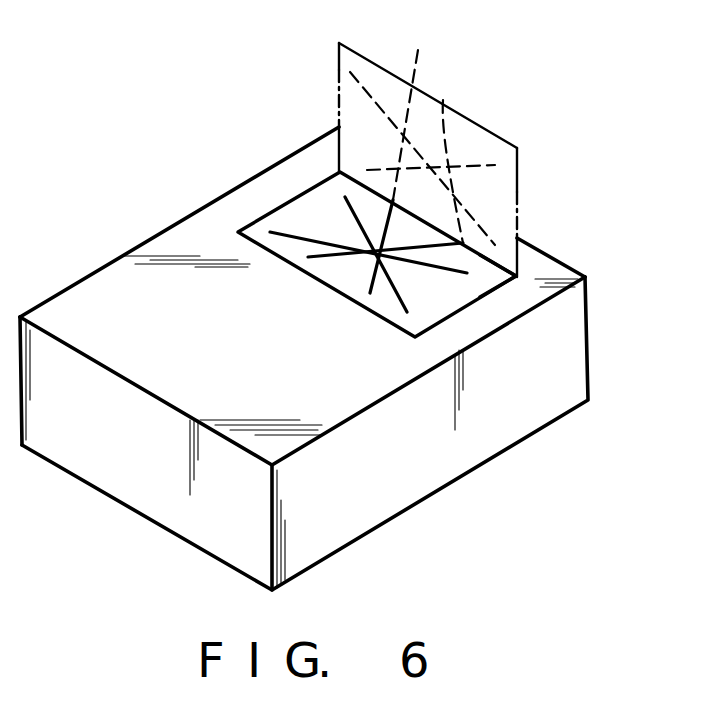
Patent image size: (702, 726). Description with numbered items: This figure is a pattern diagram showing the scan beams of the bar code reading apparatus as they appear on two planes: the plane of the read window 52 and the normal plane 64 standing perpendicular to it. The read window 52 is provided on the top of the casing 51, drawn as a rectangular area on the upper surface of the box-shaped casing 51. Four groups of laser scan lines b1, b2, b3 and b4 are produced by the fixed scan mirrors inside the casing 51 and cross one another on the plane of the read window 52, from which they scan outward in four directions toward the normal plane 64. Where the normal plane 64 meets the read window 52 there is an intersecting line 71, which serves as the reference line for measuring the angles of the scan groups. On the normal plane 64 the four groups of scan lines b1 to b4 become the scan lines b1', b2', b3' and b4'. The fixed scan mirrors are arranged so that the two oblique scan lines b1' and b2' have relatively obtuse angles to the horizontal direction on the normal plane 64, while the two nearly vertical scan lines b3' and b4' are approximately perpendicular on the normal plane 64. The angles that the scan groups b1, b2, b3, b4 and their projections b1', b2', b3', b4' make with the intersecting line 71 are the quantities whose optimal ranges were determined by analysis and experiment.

The casing 51 is at (567, 382).
The read window 52 is at (283, 222).
The normal plane 64 is at (518, 190).
The intersecting line 71 is at (495, 267).
The oblique scan line b1 is at (355, 254).
The oblique scan line b2 is at (368, 271).
The nearly vertical scan line b3 is at (378, 288).
The nearly vertical scan line b4 is at (376, 285).
The oblique scan line on normal plane b1' is at (456, 128).
The oblique scan line on normal plane b2' is at (422, 122).
The nearly vertical scan line on normal plane b3' is at (472, 143).
The nearly vertical scan line on normal plane b4' is at (415, 105).